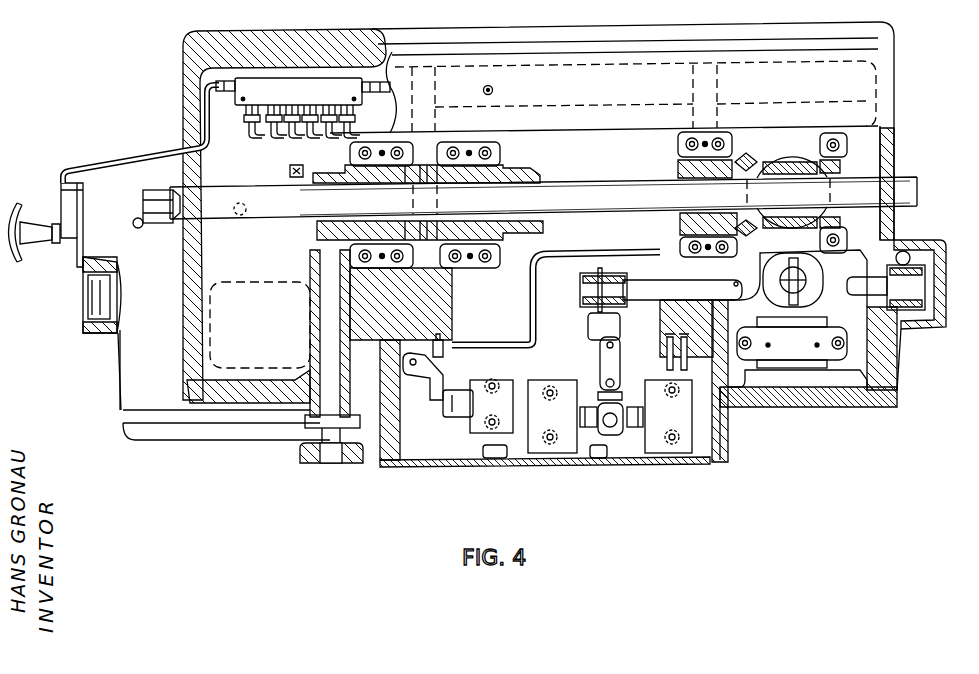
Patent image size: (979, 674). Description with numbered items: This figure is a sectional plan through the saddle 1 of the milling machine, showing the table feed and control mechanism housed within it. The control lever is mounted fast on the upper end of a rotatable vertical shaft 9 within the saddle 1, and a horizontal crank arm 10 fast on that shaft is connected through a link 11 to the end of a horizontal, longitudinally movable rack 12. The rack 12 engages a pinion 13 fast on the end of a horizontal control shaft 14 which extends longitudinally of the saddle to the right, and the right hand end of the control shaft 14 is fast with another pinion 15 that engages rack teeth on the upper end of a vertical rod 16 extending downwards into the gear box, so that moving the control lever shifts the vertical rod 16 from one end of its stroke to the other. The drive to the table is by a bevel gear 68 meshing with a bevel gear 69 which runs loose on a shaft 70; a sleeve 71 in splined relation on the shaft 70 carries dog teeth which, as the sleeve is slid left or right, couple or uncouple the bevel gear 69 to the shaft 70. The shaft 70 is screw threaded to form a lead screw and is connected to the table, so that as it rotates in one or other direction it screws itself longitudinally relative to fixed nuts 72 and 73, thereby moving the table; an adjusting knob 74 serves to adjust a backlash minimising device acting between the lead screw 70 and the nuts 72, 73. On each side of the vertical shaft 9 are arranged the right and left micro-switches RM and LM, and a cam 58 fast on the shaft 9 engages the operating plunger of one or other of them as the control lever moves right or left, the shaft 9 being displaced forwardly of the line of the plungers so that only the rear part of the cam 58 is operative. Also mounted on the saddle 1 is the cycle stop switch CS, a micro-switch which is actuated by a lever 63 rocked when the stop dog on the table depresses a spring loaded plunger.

The saddle 1 is at (190, 87).
The vertical shaft 9 is at (613, 428).
The crank arm 10 is at (607, 384).
The link 11 is at (606, 357).
The rack 12 is at (604, 321).
The pinion 13 is at (603, 270).
The control shaft 14 is at (720, 288).
The pinion 15 is at (915, 327).
The vertical rod 16 is at (923, 240).
The cam 58 is at (622, 428).
The lever 63 is at (447, 403).
The bevel gear 68 is at (797, 160).
The bevel gear 69 is at (744, 156).
The shaft 70 is at (893, 187).
The sleeve 71 is at (788, 163).
The fixed nut 72 is at (505, 172).
The fixed nut 73 is at (310, 172).
The adjusting knob 74 is at (314, 463).
The cycle stop switch CS is at (477, 420).
The right micro-switch RM is at (537, 447).
The left micro-switch LM is at (667, 412).